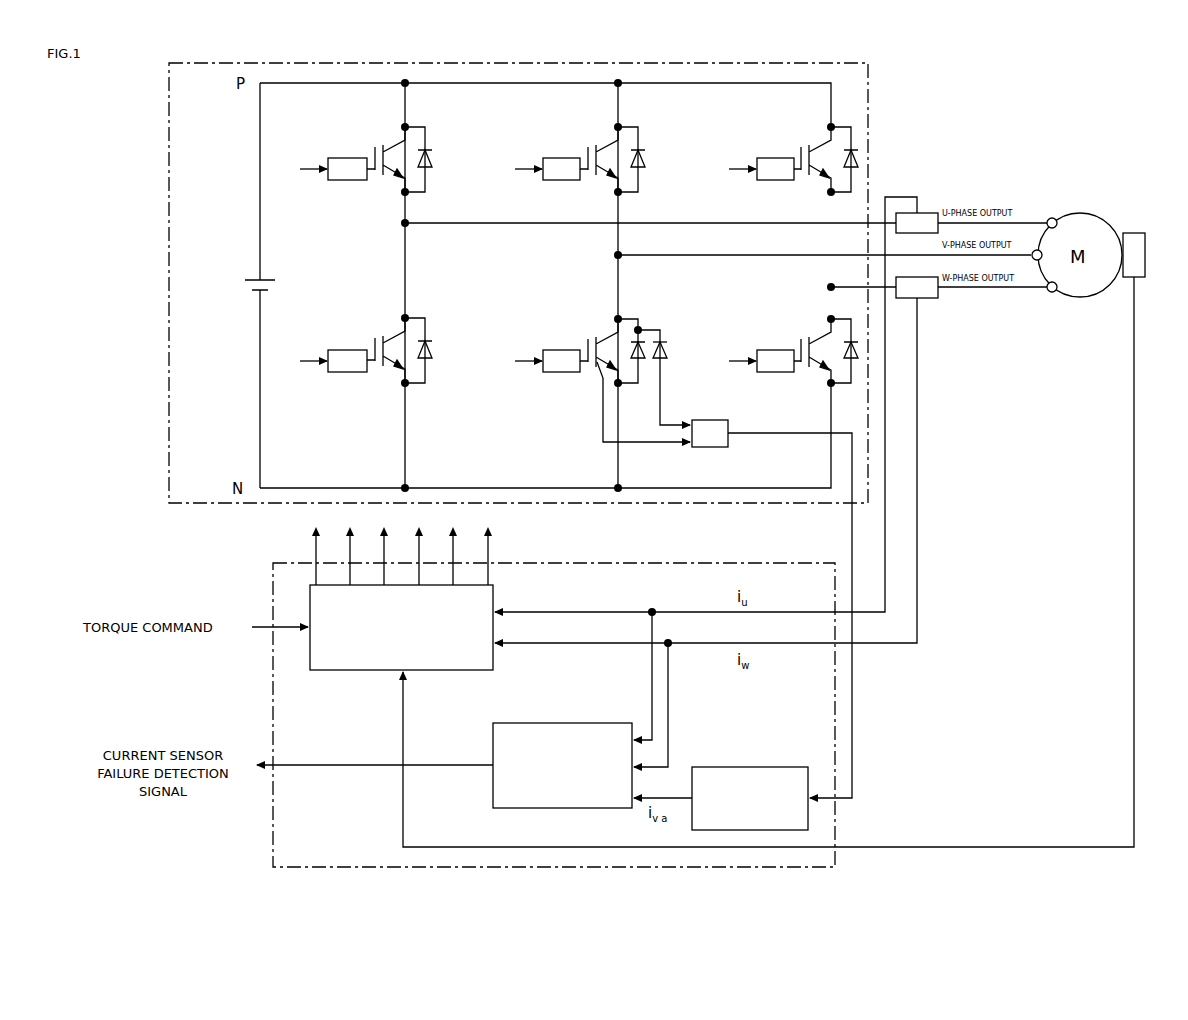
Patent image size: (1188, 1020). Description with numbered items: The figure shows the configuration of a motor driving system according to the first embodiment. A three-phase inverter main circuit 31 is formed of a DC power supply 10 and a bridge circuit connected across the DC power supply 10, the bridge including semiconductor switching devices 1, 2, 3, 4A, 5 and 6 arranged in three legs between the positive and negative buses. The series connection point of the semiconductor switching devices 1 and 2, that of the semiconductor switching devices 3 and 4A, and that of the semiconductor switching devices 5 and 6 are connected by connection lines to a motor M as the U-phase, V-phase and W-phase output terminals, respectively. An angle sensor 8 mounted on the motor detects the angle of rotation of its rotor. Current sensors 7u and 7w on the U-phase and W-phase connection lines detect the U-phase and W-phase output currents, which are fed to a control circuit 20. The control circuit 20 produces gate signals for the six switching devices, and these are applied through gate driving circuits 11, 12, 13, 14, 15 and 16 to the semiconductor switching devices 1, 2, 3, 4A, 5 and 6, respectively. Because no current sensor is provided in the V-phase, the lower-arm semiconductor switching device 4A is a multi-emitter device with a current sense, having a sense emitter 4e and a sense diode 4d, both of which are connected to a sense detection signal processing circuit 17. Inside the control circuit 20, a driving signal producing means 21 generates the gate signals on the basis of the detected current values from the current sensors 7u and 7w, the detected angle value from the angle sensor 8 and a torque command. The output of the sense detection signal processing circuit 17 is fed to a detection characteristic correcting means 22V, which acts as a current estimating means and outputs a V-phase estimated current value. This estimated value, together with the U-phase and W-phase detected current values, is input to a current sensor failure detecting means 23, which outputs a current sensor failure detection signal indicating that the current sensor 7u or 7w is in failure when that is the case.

The semiconductor switching device 1 is at (398, 131).
The semiconductor switching device 2 is at (398, 323).
The semiconductor switching device 3 is at (611, 131).
The semiconductor switching device with current sense 4A is at (611, 325).
The sense diode 4d is at (665, 340).
The sense emitter 4e is at (598, 405).
The semiconductor switching device 5 is at (824, 131).
The semiconductor switching device 6 is at (823, 326).
The current sensor 7u is at (927, 212).
The current sensor 7w is at (927, 298).
The angle sensor 8 is at (1146, 252).
The DC power supply 10 is at (245, 286).
The gate driving circuit 11 is at (350, 181).
The gate driving circuit 12 is at (350, 373).
The gate driving circuit 13 is at (563, 181).
The gate driving circuit 14 is at (562, 373).
The gate driving circuit 15 is at (777, 181).
The gate driving circuit 16 is at (776, 373).
The sense detection signal processing circuit 17 is at (710, 447).
The control circuit 20 is at (280, 870).
The driving signal producing means 21 is at (475, 670).
The detection characteristic correcting means 22V is at (748, 767).
The current sensor failure detecting means 23 is at (567, 723).
The inverter main circuit 31 is at (168, 120).